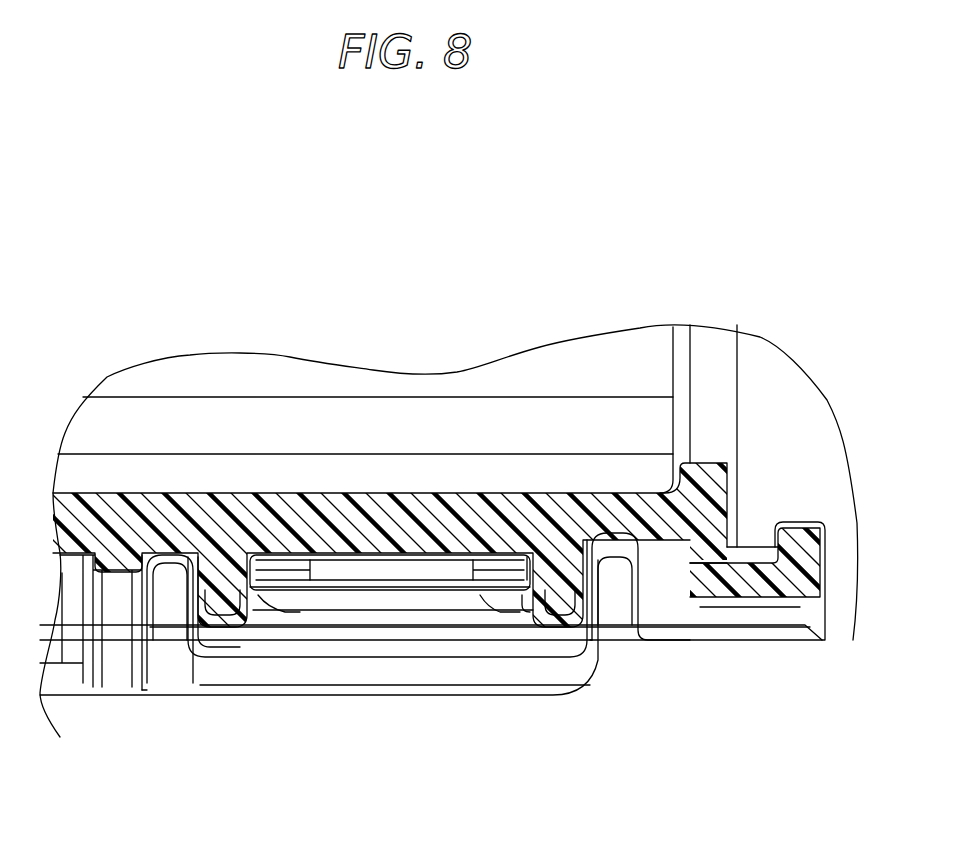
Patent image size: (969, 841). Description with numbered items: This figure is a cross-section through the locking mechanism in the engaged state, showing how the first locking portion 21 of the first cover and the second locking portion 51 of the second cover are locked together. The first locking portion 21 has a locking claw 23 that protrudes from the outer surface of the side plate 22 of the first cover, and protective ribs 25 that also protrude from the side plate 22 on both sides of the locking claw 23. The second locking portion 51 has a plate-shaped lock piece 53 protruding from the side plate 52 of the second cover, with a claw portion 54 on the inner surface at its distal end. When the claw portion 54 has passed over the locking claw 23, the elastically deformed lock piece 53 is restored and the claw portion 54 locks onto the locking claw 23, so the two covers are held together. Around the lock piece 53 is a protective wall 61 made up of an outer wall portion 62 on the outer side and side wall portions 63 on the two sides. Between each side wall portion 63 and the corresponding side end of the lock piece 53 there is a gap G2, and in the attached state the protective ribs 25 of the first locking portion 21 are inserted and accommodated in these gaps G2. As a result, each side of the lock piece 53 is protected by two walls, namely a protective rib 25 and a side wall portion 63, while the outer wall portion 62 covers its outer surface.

The first locking portion 21 is at (498, 562).
The side plate 22 is at (603, 512).
The locking claw 23 is at (281, 572).
The protective ribs 25 is at (229, 602).
The second locking portion 51 is at (199, 700).
The side plate 52 is at (748, 617).
The lock piece 53 is at (483, 632).
The claw portion 54 is at (381, 572).
The protective wall 61 is at (399, 699).
The outer wall portion 62 is at (453, 682).
The side wall portions 63 is at (134, 596).
The gap G2 is at (186, 598).